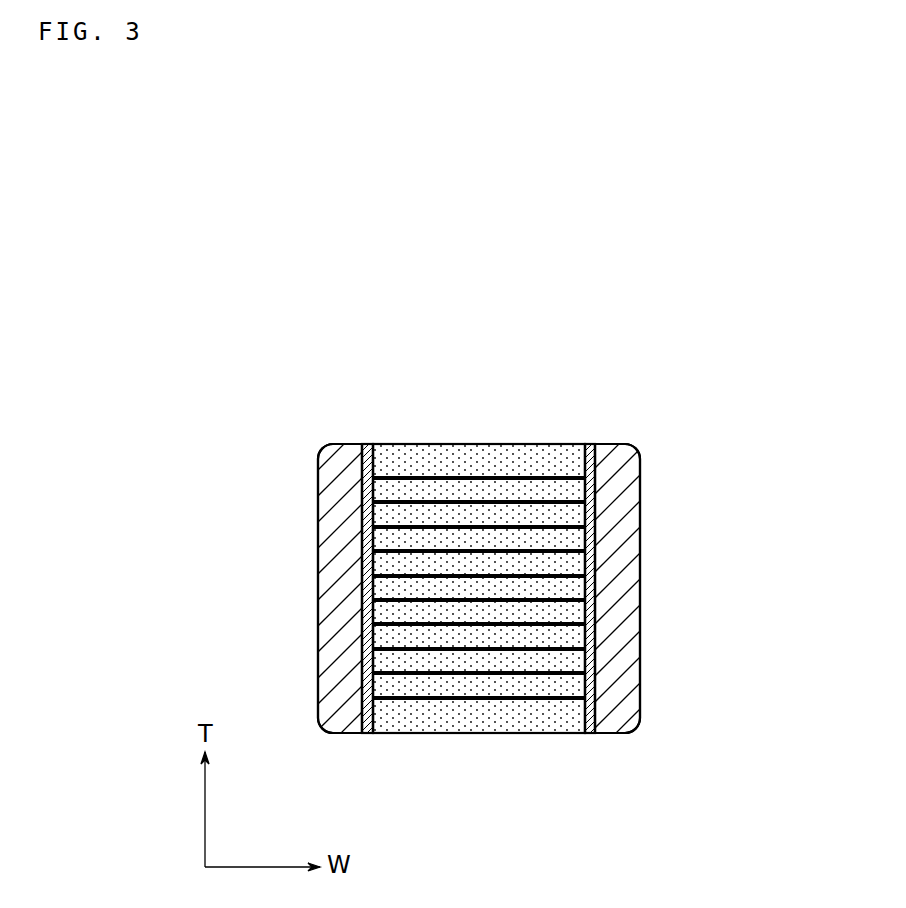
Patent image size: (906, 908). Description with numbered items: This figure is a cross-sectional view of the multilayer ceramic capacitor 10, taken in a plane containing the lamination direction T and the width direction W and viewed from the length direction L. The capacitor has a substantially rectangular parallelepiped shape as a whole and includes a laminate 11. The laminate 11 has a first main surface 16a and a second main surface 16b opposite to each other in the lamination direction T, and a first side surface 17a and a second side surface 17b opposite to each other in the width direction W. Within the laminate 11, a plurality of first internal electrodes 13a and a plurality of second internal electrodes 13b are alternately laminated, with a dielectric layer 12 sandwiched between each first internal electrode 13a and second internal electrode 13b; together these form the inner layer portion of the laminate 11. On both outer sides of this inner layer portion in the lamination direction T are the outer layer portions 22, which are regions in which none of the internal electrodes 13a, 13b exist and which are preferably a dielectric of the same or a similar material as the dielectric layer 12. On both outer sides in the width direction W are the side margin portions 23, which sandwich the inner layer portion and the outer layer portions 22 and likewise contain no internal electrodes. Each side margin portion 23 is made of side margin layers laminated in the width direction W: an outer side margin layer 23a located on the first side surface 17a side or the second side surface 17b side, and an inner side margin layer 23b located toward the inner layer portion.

The multilayer ceramic capacitor 10 is at (440, 270).
The laminate 11 is at (502, 443).
The dielectric layer 12 is at (563, 658).
The first internal electrode 13a is at (482, 577).
The second internal electrode 13b is at (428, 602).
The first main surface 16a is at (558, 443).
The second main surface 16b is at (458, 733).
The first side surface 17a is at (318, 558).
The second side surface 17b is at (640, 603).
The outer layer portion 22 is at (477, 443).
The side margin portion 23 is at (338, 310).
The outer side margin layer 23a is at (335, 443).
The inner side margin layer 23b is at (365, 443).